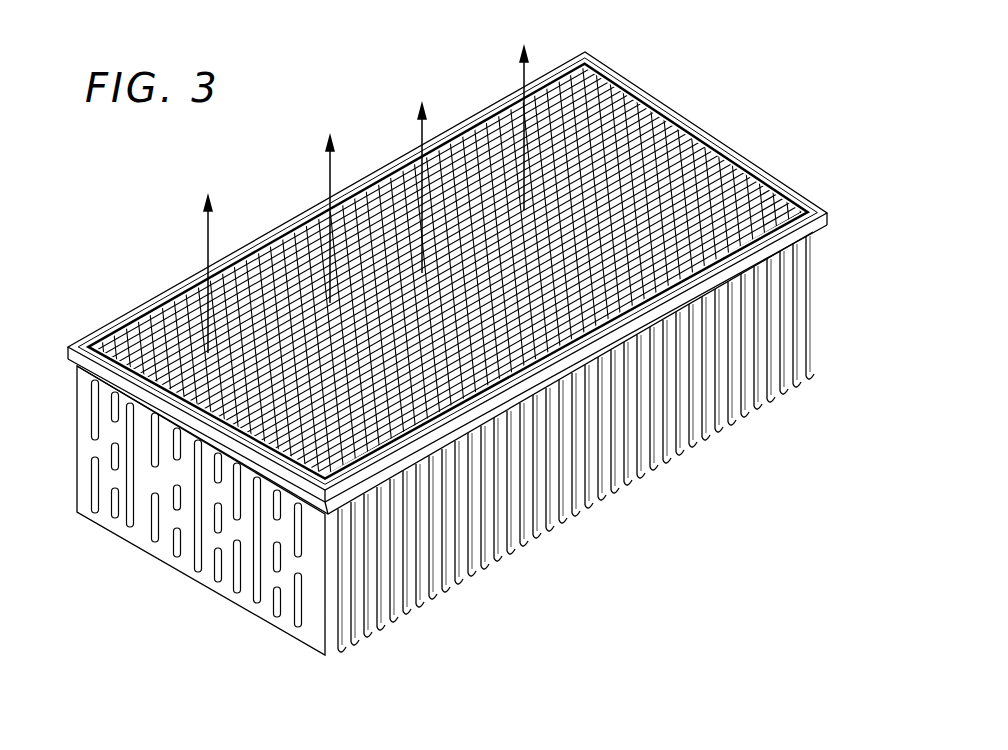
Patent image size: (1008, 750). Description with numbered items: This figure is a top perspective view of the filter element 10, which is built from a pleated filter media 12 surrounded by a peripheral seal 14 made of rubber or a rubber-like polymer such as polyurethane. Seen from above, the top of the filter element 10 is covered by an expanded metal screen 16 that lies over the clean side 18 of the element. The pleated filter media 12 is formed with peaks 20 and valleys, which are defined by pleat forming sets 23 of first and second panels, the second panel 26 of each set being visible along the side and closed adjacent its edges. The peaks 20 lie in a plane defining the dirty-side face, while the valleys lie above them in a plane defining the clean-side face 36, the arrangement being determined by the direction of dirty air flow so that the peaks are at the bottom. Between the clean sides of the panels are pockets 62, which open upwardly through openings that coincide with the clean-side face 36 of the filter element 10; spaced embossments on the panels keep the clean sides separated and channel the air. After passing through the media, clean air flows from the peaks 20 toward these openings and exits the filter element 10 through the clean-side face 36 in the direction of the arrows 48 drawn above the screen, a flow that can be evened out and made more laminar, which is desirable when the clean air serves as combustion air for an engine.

The filter element 10 is at (444, 348).
The pleated filter media 12 is at (576, 455).
The peripheral seal 14 is at (365, 177).
The expanded metal screen 16 is at (285, 272).
The clean side 18 is at (444, 321).
The peaks 20 is at (576, 455).
The pleat forming sets 23 is at (647, 468).
The second panel 26 is at (170, 520).
The clean-side face 36 is at (657, 170).
The arrows 48 is at (212, 222).
The pockets 62 is at (408, 590).